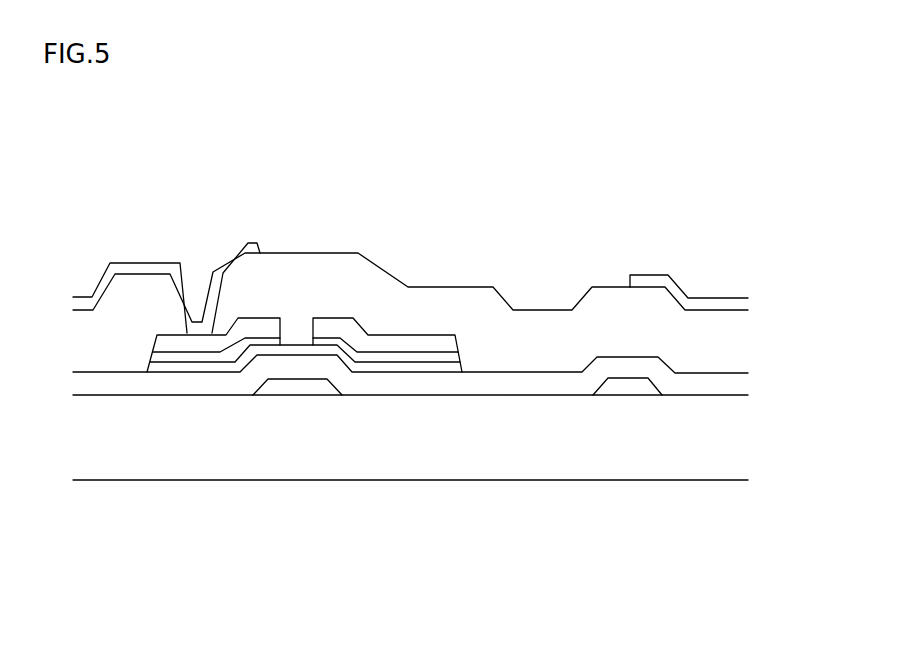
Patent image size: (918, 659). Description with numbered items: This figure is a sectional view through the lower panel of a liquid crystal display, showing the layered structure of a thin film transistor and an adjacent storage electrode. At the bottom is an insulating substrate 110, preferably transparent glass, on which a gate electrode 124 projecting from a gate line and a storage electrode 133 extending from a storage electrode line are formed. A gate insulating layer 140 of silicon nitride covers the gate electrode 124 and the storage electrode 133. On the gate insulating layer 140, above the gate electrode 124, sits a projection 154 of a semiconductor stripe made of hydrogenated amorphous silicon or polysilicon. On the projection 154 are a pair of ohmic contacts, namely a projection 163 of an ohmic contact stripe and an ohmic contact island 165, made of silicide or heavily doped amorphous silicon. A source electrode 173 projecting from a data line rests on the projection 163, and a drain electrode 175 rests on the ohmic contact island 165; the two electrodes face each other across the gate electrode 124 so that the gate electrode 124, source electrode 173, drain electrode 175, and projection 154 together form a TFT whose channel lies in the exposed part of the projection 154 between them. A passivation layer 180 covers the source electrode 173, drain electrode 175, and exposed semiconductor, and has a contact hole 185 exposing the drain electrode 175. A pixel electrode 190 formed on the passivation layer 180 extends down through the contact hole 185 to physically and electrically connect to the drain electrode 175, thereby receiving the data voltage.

The insulating substrate 110 is at (495, 455).
The gate electrode 124 is at (280, 388).
The storage electrode 133 is at (627, 390).
The gate insulating layer 140 is at (400, 374).
The projection 154 is at (353, 362).
The projection 163 is at (338, 337).
The ohmic contact island 165 is at (198, 356).
The source electrode 173 is at (392, 337).
The drain electrode 175 is at (176, 340).
The passivation layer 180 is at (537, 312).
The contact hole 185 is at (194, 266).
The pixel electrode 190 is at (142, 267).